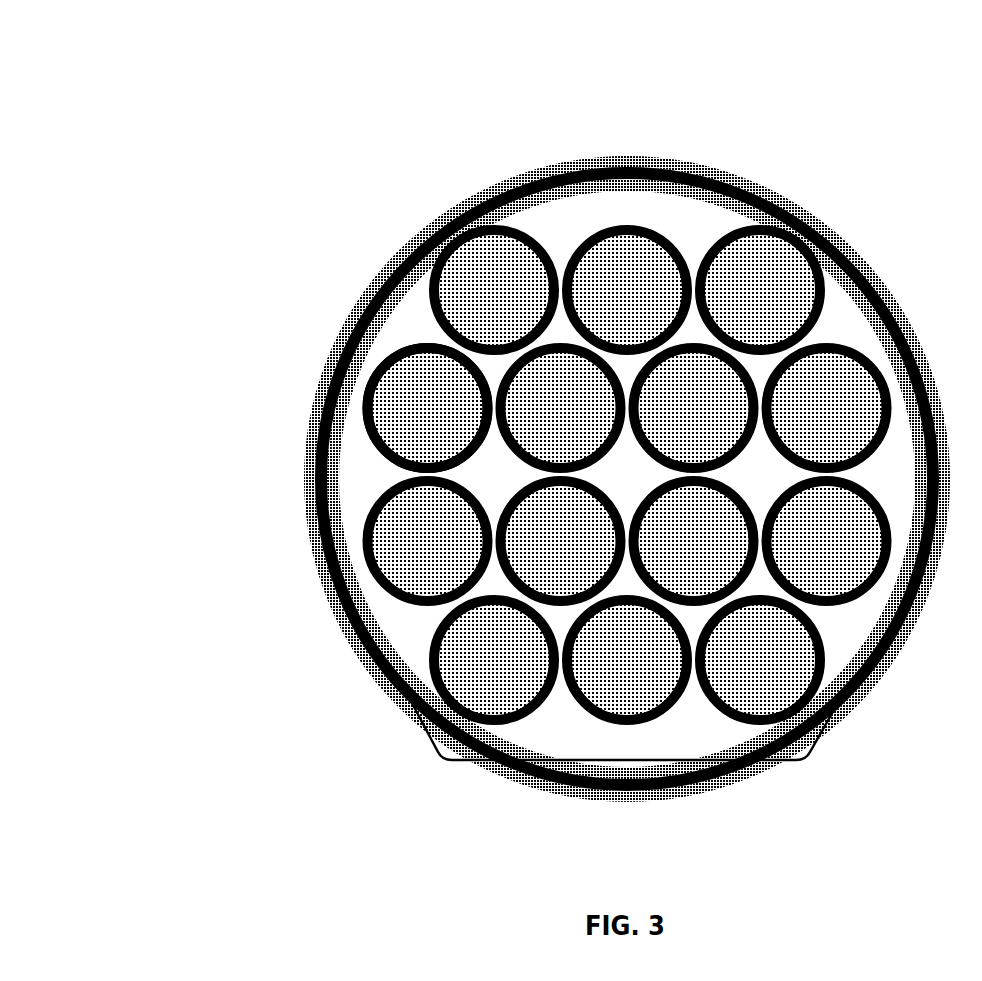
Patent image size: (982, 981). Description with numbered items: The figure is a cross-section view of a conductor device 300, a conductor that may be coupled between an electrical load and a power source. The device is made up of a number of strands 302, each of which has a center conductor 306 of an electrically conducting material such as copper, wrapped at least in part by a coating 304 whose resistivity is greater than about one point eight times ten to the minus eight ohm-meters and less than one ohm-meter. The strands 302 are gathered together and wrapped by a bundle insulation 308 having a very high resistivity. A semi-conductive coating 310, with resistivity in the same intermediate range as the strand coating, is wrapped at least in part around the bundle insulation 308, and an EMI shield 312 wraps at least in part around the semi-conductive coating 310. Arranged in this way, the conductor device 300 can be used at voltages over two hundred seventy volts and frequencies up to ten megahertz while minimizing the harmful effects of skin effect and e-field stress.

The conductor device 300 is at (162, 54).
The strands 302 is at (624, 760).
The coating 304 is at (411, 341).
The center conductor 306 is at (627, 475).
The bundle insulation 308 is at (632, 178).
The semi-conductive coating 310 is at (753, 181).
The EMI shield 312 is at (828, 221).